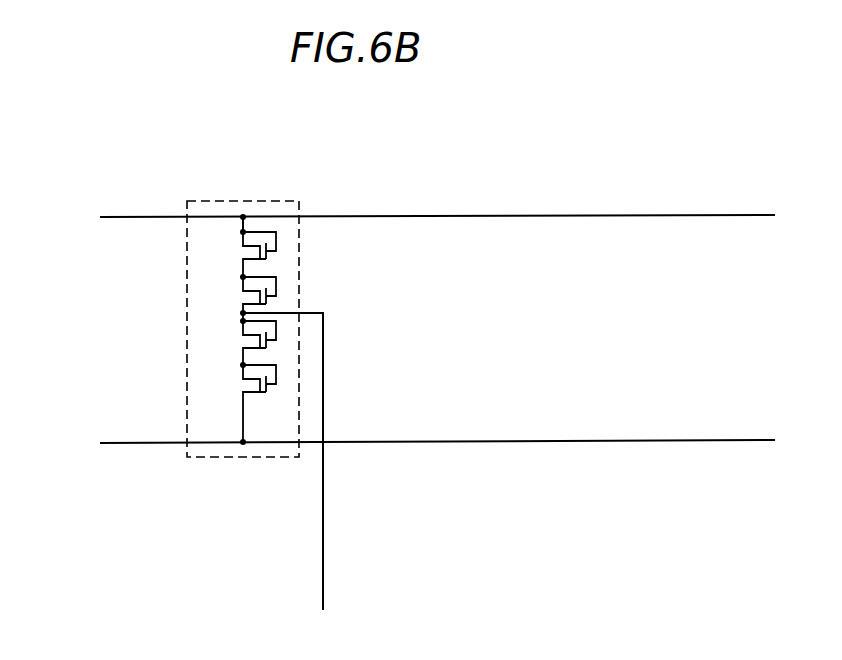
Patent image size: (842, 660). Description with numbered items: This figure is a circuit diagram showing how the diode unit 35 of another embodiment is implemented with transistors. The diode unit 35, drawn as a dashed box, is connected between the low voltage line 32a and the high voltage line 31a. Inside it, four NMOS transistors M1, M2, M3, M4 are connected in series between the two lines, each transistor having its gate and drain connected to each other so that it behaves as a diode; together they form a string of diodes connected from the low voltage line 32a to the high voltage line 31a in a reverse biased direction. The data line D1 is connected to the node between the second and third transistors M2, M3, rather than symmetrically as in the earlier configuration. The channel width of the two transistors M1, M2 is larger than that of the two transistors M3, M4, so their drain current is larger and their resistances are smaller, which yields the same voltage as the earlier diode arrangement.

The diode unit 35 is at (237, 200).
The low voltage line 32a is at (100, 217).
The high voltage line 31a is at (100, 443).
The NMOS transistor M1 is at (240, 253).
The NMOS transistor M2 is at (240, 297).
The NMOS transistor M3 is at (240, 341).
The NMOS transistor M4 is at (240, 402).
The data line D1 is at (298, 461).